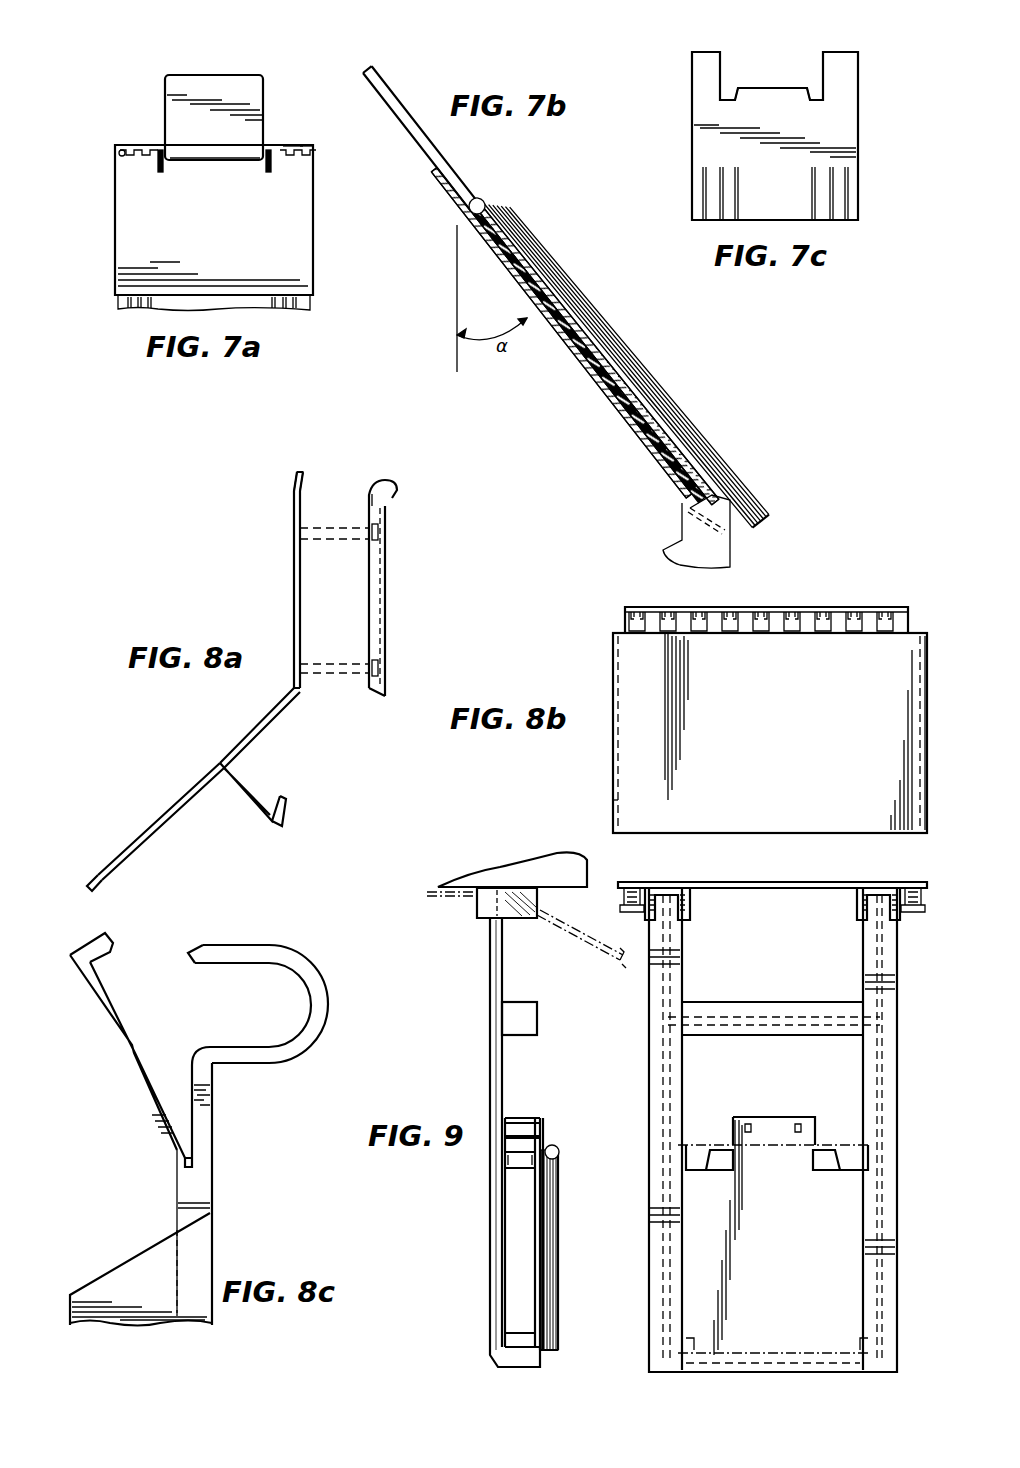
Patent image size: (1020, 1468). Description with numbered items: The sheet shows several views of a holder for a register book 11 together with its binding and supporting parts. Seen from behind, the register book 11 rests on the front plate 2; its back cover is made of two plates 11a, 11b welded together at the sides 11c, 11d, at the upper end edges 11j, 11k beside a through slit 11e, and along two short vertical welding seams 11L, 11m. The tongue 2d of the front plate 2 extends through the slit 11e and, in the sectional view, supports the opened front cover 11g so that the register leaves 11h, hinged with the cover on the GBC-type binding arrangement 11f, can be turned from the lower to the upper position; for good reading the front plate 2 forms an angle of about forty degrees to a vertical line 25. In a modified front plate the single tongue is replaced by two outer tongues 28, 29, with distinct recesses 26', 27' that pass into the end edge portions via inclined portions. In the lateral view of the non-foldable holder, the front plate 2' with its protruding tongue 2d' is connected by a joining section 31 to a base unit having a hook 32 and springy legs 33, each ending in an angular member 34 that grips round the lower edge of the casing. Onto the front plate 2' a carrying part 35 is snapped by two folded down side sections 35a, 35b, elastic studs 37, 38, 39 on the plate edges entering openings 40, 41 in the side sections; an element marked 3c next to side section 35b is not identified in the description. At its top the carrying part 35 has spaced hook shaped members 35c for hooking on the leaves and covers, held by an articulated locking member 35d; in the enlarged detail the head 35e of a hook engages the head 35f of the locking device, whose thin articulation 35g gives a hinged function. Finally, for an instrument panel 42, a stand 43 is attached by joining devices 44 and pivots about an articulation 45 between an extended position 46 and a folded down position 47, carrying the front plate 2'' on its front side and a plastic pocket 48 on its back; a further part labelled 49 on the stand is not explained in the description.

In FIG. 7a, the front plate 2 is at (225, 299).
In FIG. 7a, the tongue 2d is at (231, 111).
In FIG. 7b, the tongue 2d is at (550, 333).
In FIG. 8a, the front plate 2' is at (311, 580).
In FIG. 8a, the protruding tongue 2d' is at (275, 483).
In FIG. 9, the front plate 2'' is at (567, 1234).
In FIG. 8b, the frame member 3c is at (927, 776).
In FIG. 7a, the register book 11 is at (82, 203).
In FIG. 7b, the plate 11a is at (577, 364).
In FIG. 7b, the plate 11b is at (672, 430).
In FIG. 7a, the side 11c is at (313, 261).
In FIG. 7a, the side 11d is at (114, 260).
In FIG. 7a, the through slit 11e is at (187, 160).
In FIG. 7a, the binding arrangement 11f is at (292, 144).
In FIG. 7b, the binding arrangement 11f is at (486, 204).
In FIG. 7b, the front cover 11g is at (426, 150).
In FIG. 7b, the register leaves 11h is at (462, 176).
In FIG. 7a, the upper end edge 11j is at (122, 150).
In FIG. 7a, the upper end edge 11k is at (311, 150).
In FIG. 7a, the welding seam 11L is at (158, 169).
In FIG. 7a, the welding seam 11m is at (271, 168).
In FIG. 7b, the vertical line 25 is at (457, 310).
In FIG. 7c, the recess 26' is at (804, 60).
In FIG. 7c, the recess 27' is at (741, 60).
In FIG. 7c, the outer tongue 28 is at (838, 60).
In FIG. 7c, the outer tongue 29 is at (708, 60).
In FIG. 8a, the joining section 31 is at (258, 746).
In FIG. 8a, the hook 32 is at (280, 818).
In FIG. 8a, the springy leg 33 is at (144, 838).
In FIG. 8a, the angular member 34 is at (86, 883).
In FIG. 8a, the carrying part 35 is at (426, 598).
In FIG. 8c, the carrying part 35 is at (121, 1168).
In FIG. 8a, the folded down side section 35a is at (369, 608).
In FIG. 8b, the folded down side section 35a is at (613, 773).
In FIG. 8c, the folded down side section 35a is at (114, 1284).
In FIG. 8b, the folded down side section 35b is at (921, 697).
In FIG. 8a, the hook shaped member 35c is at (394, 489).
In FIG. 8b, the hook shaped member 35c is at (634, 612).
In FIG. 8c, the hook shaped member 35c is at (300, 967).
In FIG. 8a, the locking member 35d is at (367, 491).
In FIG. 8c, the head 35e is at (202, 949).
In FIG. 8c, the head 35f is at (108, 953).
In FIG. 8c, the articulation 35g is at (192, 1157).
In FIG. 8b, the elastic stud 37 is at (927, 675).
In FIG. 8b, the elastic stud 38 is at (613, 690).
In FIG. 8b, the elastic stud 39 is at (613, 800).
In FIG. 8a, the opening 40 is at (378, 666).
In FIG. 8a, the opening 41 is at (378, 532).
In FIG. 9, the instrument panel 42 is at (572, 884).
In FIG. 9, the stand 43 is at (498, 988).
In FIG. 9, the joining devices 44 is at (634, 896).
In FIG. 9, the articulation 45 is at (476, 918).
In FIG. 9, the extended position 46 is at (604, 957).
In FIG. 9, the folded down position 47 is at (440, 896).
In FIG. 9, the plastic pocket 48 is at (502, 1244).
In FIG. 9, the spacer 49 is at (520, 1121).